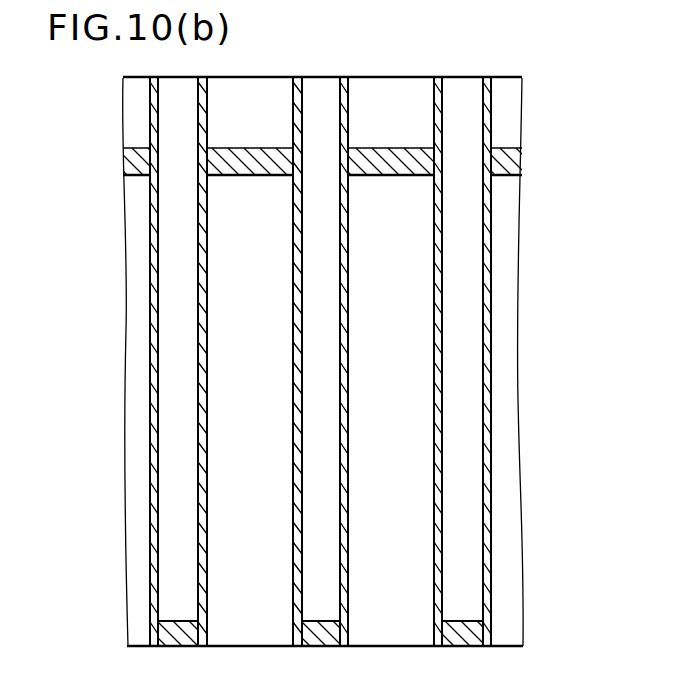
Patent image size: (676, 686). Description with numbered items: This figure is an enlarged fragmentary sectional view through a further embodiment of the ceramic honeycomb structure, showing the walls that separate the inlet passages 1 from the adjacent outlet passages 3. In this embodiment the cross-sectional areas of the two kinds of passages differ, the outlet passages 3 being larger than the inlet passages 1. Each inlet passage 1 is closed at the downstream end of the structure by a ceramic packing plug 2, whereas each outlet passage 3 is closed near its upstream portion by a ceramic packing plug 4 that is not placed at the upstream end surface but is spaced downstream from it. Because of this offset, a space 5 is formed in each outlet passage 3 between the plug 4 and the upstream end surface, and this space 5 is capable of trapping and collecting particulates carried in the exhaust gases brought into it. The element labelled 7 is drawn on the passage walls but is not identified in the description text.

The inlet passage 1 is at (315, 542).
The ceramic packing plug 2 is at (480, 630).
The outlet passage 3 is at (420, 575).
The ceramic packing plug 4 is at (412, 160).
The space 5 is at (385, 102).
The side wall insulating film 7 is at (489, 320).